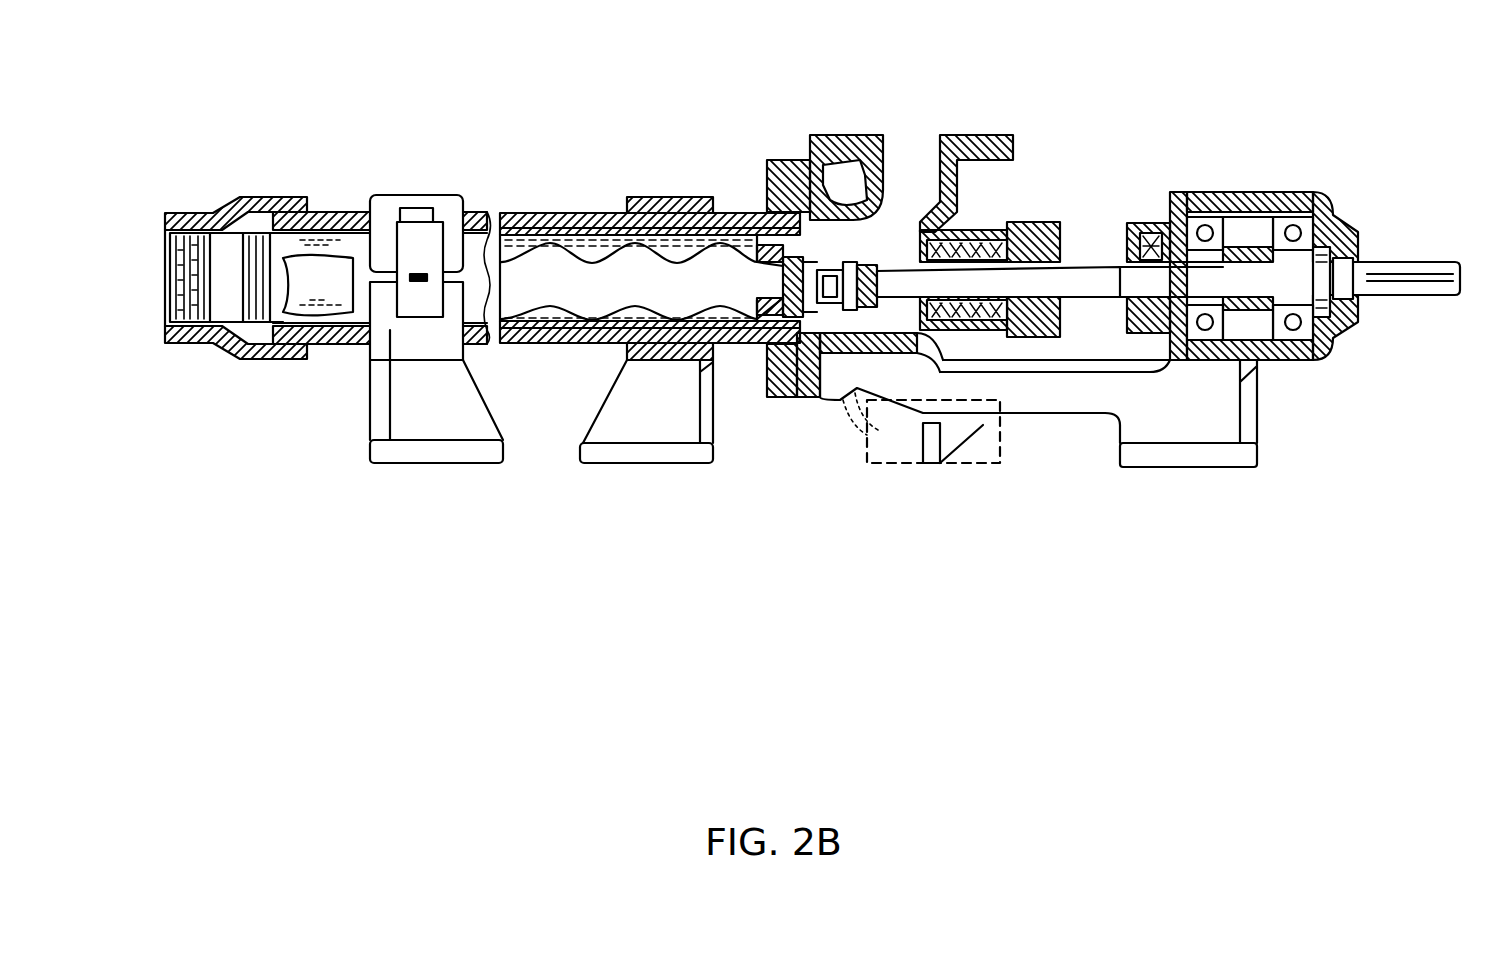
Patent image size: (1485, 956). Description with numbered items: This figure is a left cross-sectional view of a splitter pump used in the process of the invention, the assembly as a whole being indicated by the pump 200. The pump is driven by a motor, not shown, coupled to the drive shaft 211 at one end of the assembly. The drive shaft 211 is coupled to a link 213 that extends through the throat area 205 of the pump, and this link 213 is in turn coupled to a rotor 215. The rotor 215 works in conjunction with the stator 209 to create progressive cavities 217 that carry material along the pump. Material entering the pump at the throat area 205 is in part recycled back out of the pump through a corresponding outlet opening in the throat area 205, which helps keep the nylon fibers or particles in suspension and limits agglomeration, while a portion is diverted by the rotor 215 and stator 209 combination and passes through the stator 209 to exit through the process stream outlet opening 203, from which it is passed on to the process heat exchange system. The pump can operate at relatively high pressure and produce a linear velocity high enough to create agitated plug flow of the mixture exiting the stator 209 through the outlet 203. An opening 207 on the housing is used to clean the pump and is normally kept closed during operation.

The progressing cavity pump 200 is at (1247, 473).
The process stream outlet opening 203 is at (163, 297).
The throat area 205 is at (838, 330).
The opening 207 is at (918, 135).
The stator 209 is at (525, 213).
The drive shaft 211 is at (1413, 300).
The link 213 is at (1060, 282).
The rotor 215 is at (623, 283).
The progressive cavities 217 is at (600, 253).